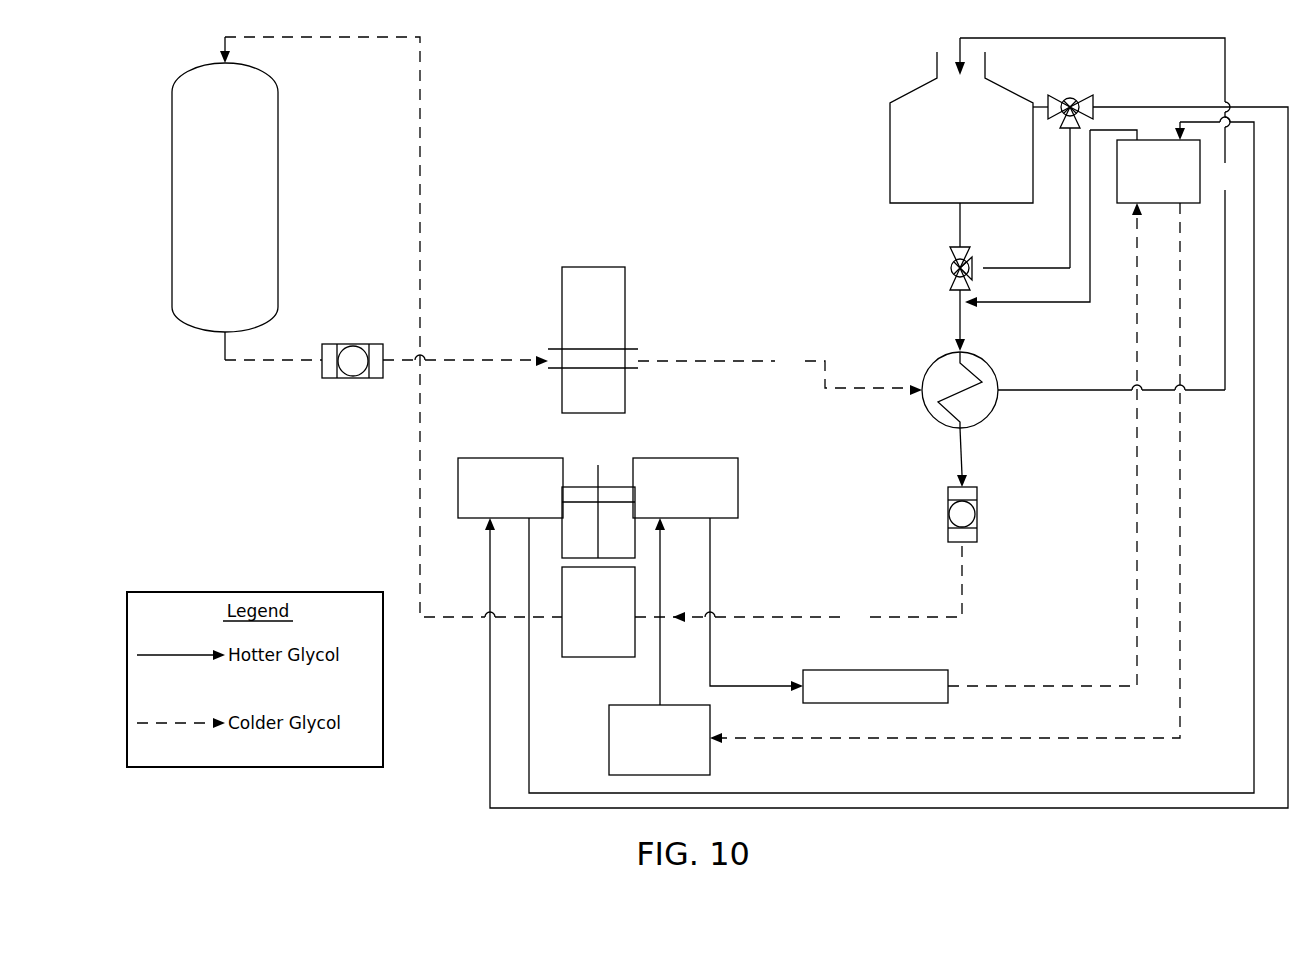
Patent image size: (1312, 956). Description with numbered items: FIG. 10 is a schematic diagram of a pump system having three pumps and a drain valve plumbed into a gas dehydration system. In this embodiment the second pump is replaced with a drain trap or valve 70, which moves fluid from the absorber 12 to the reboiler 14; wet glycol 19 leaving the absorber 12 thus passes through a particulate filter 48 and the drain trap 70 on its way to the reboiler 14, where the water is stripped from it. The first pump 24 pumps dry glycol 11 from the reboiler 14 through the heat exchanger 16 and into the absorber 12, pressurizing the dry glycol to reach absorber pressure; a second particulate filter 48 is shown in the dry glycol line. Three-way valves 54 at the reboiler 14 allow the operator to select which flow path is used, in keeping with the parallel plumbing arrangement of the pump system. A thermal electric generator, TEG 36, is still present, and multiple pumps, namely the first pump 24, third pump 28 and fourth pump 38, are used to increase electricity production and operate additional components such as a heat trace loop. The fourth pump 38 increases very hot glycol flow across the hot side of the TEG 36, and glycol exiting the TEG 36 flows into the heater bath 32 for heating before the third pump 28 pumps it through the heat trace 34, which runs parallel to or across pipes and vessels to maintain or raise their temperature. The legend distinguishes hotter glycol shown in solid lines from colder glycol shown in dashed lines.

The absorber 12 is at (225, 198).
The dry glycol 11 is at (960, 233).
The wet glycol 19 is at (724, 287).
The particulate filter 48 is at (359, 346).
The drain trap or valve 70 is at (593, 340).
The reboiler 14 is at (1060, 214).
The three-way valve 54 is at (1070, 96).
The heat exchanger 16 is at (930, 363).
The thermal electric generator 36 is at (891, 455).
The fourth pump 38 is at (510, 488).
The third pump 28 is at (718, 581).
The first pump 24 is at (598, 561).
The heat trace 34 is at (972, 453).
The heater bath 32 is at (894, 489).